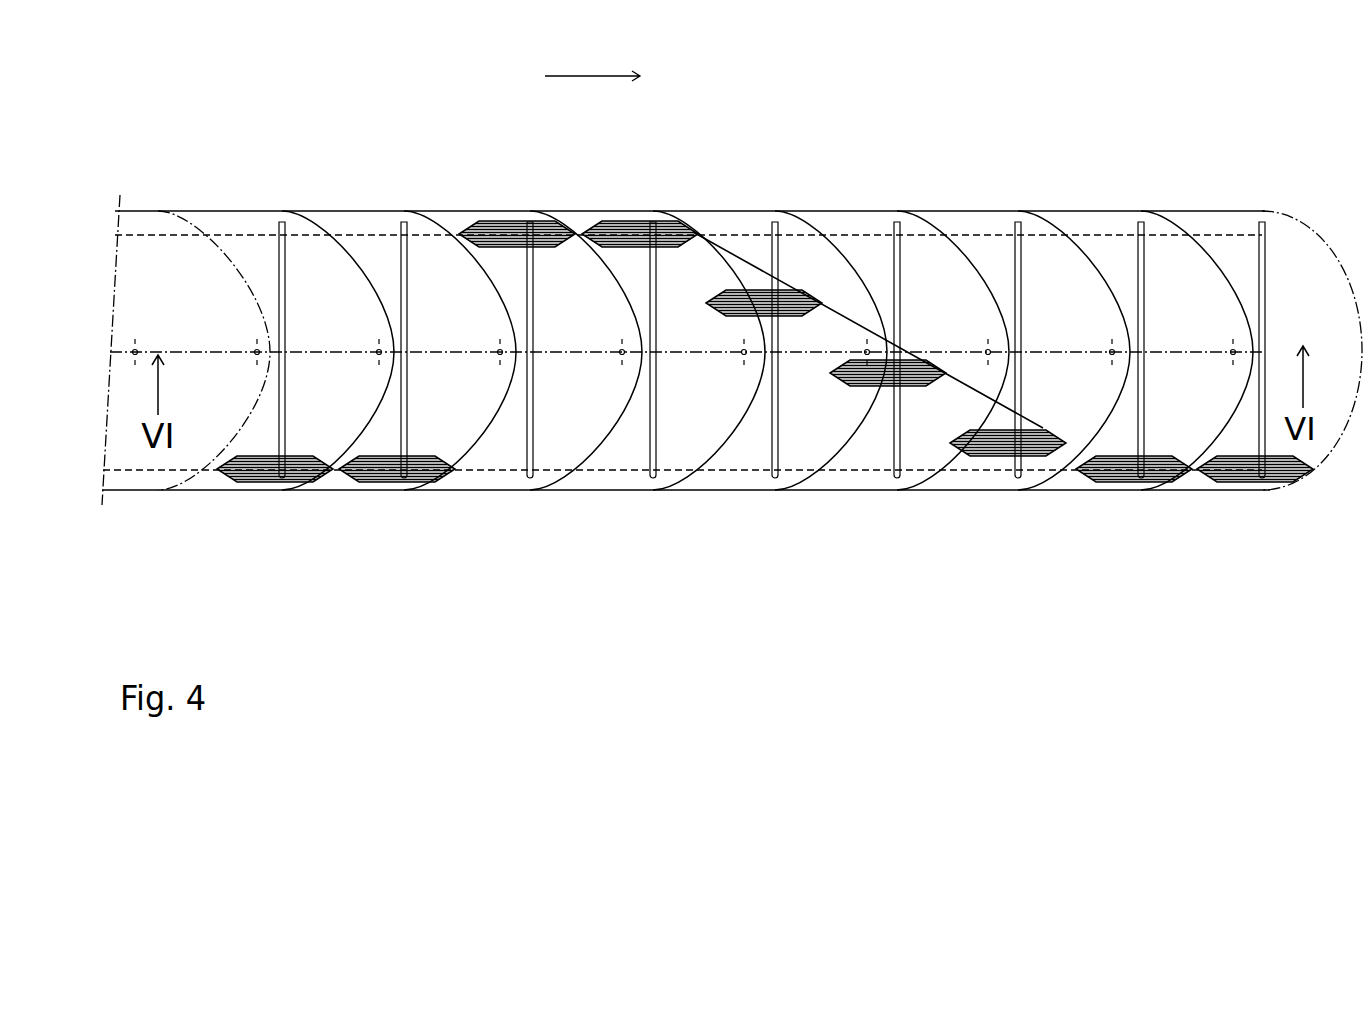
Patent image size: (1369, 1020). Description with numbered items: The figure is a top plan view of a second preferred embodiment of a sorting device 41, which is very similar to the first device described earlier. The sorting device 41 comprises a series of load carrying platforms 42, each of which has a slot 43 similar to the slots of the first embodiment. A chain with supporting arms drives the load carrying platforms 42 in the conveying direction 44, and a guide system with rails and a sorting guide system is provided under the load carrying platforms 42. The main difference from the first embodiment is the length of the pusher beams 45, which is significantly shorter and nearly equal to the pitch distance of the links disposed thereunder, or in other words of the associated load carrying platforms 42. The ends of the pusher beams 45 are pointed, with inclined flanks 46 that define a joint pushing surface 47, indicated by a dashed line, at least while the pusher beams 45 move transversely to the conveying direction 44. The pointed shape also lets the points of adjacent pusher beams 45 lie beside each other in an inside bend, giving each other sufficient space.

The sorting device 41 is at (917, 147).
The load carrying platform 42 is at (607, 479).
The slot 43 is at (531, 443).
The conveying direction 44 is at (590, 74).
The pusher beam 45 is at (985, 448).
The inclined flank 46 is at (697, 230).
The joint pushing surface 47 is at (750, 260).